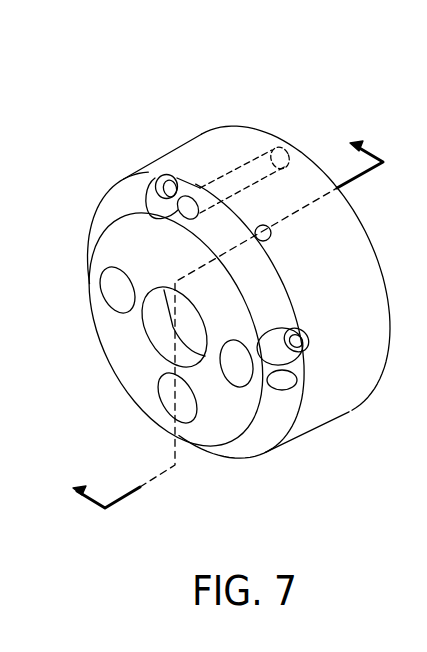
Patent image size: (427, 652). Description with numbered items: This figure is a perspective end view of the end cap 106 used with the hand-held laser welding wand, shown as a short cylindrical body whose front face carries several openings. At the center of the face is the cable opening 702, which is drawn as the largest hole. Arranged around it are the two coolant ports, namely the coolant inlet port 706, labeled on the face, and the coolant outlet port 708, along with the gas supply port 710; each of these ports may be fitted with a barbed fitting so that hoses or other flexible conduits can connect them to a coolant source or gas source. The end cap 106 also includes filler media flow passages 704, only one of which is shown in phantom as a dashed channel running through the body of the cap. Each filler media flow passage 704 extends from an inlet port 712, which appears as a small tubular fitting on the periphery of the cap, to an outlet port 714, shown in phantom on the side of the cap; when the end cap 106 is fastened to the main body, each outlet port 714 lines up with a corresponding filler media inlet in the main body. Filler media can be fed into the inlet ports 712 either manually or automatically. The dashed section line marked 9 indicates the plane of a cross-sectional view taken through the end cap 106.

The end cap 106 is at (133, 127).
The cable opening 702 is at (168, 305).
The filler media flow passage 704 is at (240, 165).
The coolant inlet port 706 is at (112, 288).
The coolant outlet port 708 is at (240, 373).
The gas supply port 710 is at (168, 392).
The inlet port 712 is at (190, 207).
The outlet port 714 is at (281, 148).
The section line 9- 9 is at (212, 310).